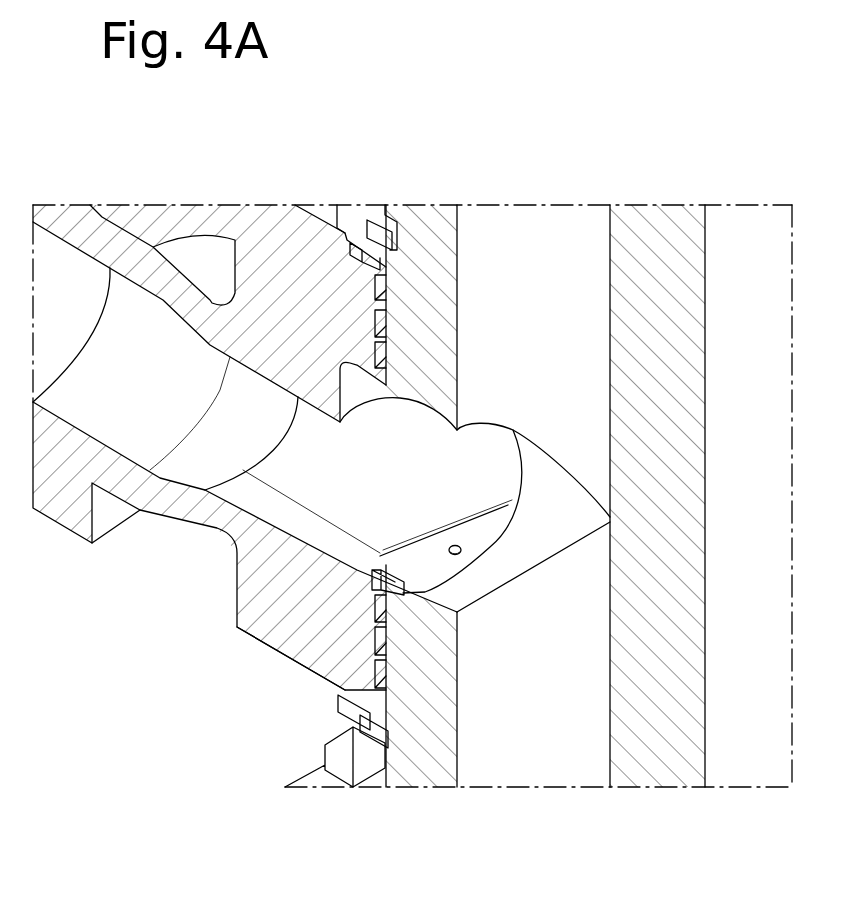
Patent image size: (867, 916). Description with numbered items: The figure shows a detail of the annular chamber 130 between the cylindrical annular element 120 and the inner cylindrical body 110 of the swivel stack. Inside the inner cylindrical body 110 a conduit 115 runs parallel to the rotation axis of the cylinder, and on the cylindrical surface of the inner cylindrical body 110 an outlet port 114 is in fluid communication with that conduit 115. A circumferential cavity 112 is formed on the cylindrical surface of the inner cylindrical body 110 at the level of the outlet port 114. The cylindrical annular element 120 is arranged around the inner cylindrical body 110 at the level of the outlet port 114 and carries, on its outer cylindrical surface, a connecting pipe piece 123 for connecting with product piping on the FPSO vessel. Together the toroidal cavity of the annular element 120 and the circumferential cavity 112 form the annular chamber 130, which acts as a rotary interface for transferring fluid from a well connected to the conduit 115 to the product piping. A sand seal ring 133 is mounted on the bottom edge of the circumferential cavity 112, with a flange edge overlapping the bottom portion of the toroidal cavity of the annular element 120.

The inner cylindrical body 110 is at (665, 240).
The conduit 115 is at (547, 247).
The cylindrical annular element 120 is at (403, 566).
The connecting pipe piece 123 is at (237, 430).
The annular chamber 130 is at (458, 493).
The sand seal ring 133 is at (343, 667).
The circumferential cavity 112 is at (427, 583).
The outlet port 114 is at (527, 553).